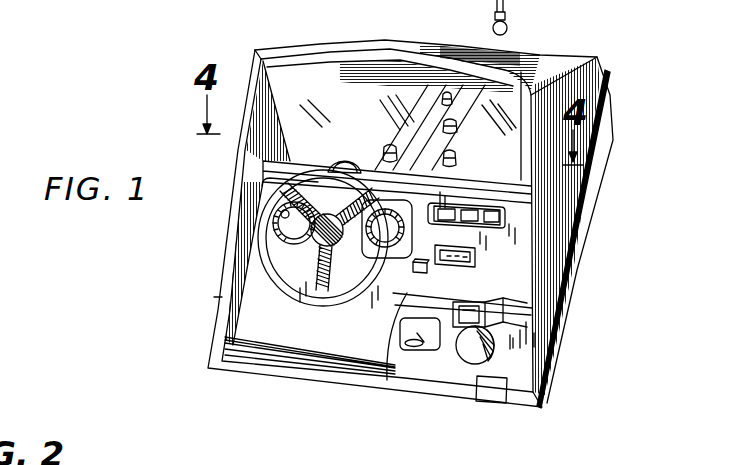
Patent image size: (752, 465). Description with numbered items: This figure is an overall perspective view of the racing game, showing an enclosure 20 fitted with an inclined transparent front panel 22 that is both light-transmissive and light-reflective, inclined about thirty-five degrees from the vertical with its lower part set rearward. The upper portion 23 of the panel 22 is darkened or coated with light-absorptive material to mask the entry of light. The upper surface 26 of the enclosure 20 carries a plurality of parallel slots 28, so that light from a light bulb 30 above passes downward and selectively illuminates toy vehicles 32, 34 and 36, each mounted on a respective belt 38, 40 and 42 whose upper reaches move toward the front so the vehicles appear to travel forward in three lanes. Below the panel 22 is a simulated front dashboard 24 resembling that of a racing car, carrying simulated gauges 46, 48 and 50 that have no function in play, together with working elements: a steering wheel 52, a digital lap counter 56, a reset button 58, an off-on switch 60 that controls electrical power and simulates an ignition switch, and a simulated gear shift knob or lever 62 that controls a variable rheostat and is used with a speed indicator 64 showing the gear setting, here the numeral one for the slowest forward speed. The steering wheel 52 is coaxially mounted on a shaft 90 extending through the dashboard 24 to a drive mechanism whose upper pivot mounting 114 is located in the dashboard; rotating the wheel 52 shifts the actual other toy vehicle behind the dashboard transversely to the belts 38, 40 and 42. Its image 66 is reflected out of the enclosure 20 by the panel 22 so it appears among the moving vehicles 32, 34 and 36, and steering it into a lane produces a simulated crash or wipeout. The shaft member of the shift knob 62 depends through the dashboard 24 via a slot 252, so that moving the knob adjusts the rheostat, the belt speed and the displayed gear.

The enclosure 20 is at (617, 100).
The inclined transparent front panel 22 is at (520, 168).
The upper portion of panel 23 is at (306, 60).
The simulated front dashboard 24 is at (527, 258).
The upper surface of enclosure 26 is at (598, 55).
The parallel slots 28 is at (512, 51).
The light bulb 30 is at (493, 27).
The toy vehicle 32 is at (456, 126).
The toy vehicle 34 is at (432, 92).
The toy vehicle 36 is at (384, 149).
The belt 38 is at (463, 103).
The belt 40 is at (430, 124).
The belt 42 is at (423, 86).
The simulated gauge 46 is at (497, 216).
The simulated gauge 48 is at (407, 254).
The simulated gauge 50 is at (270, 220).
The steering wheel 52 is at (258, 252).
The digital lap counter 56 is at (470, 250).
The reset button 58 is at (427, 271).
The off-on switch 60 is at (425, 348).
The simulated gear shift knob 62 is at (496, 355).
The speed indicator 64 is at (457, 323).
The image of other toy vehicle 66 is at (457, 158).
The shaft 90 is at (312, 256).
The upper pivot mounting 114 is at (337, 162).
The slot 252 is at (505, 322).